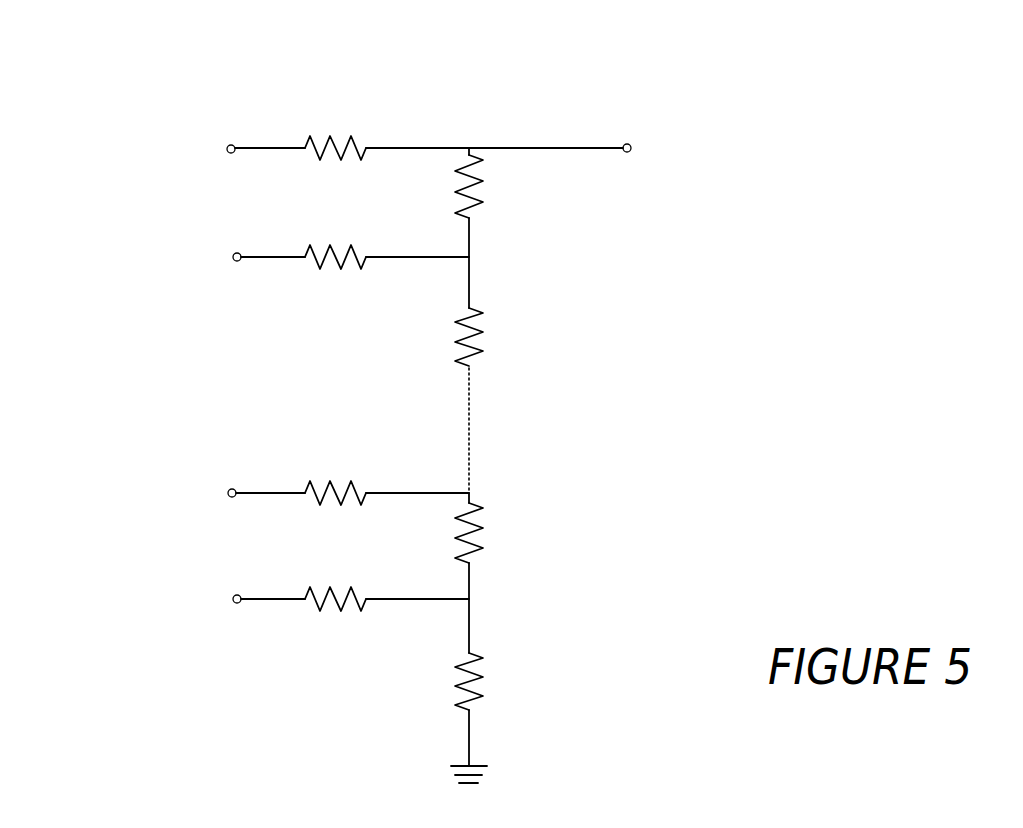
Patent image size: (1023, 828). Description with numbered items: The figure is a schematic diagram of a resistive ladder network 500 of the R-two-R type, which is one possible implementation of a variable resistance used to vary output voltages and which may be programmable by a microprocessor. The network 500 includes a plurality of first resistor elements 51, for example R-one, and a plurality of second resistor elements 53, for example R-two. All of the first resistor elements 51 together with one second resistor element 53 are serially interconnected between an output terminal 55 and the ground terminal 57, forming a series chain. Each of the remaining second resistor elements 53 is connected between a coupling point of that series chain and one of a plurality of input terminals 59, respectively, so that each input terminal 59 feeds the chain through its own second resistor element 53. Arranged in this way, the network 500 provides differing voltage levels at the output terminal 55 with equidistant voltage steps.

The R-2R network 500 is at (155, 68).
The first resistor element 51 is at (335, 349).
The second resistor element 53 is at (496, 429).
The output terminal 55 is at (651, 139).
The ground terminal 57 is at (495, 751).
The input terminal 59 is at (245, 361).